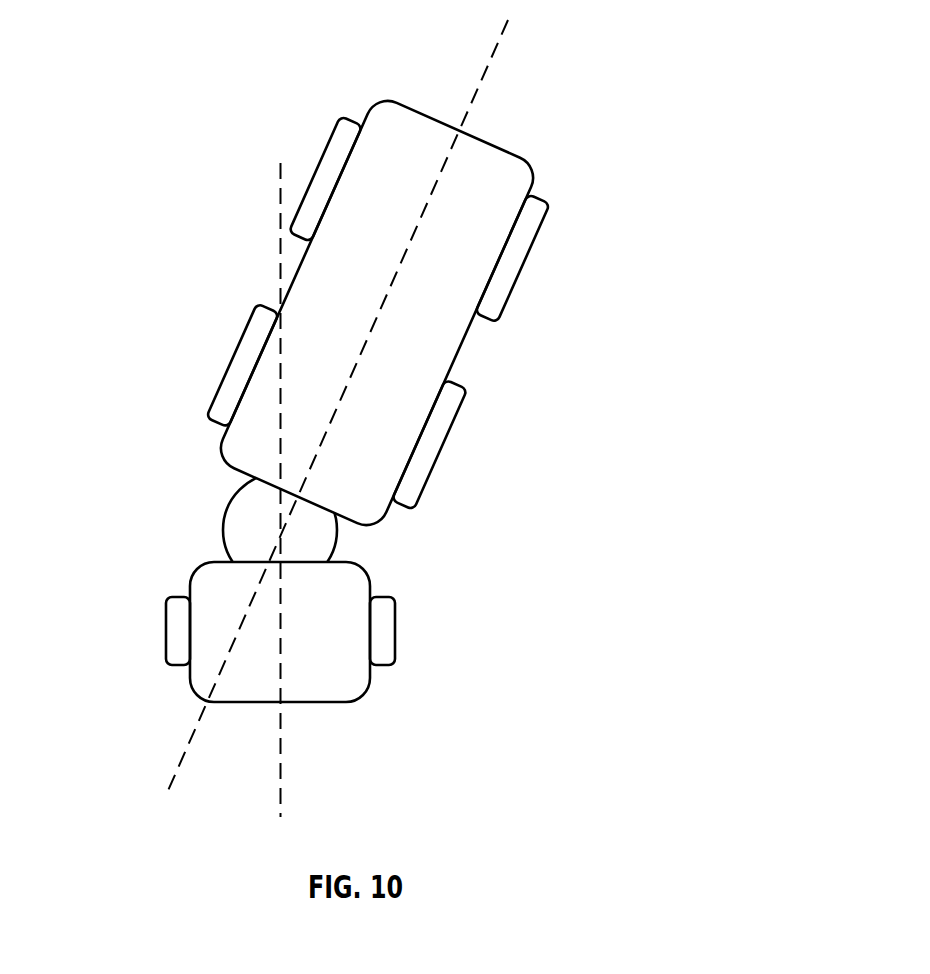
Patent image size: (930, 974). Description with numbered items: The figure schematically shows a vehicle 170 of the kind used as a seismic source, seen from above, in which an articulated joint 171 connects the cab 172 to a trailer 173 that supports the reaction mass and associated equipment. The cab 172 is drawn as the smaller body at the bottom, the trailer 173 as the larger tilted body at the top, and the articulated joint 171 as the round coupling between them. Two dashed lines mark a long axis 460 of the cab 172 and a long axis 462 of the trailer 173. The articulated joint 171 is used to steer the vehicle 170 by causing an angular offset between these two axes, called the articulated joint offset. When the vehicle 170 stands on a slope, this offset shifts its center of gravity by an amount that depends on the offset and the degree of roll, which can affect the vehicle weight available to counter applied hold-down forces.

The vehicle 170 is at (147, 94).
The articulated joint 171 is at (223, 528).
The cab 172 is at (166, 632).
The trailer 173 is at (386, 96).
The long axis of the cab 460 is at (280, 210).
The long axis of the trailer 462 is at (491, 62).